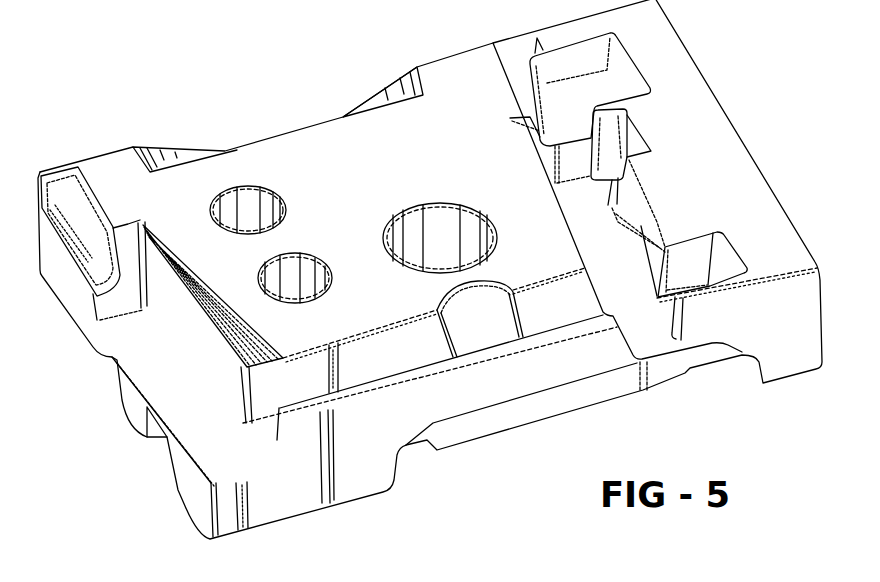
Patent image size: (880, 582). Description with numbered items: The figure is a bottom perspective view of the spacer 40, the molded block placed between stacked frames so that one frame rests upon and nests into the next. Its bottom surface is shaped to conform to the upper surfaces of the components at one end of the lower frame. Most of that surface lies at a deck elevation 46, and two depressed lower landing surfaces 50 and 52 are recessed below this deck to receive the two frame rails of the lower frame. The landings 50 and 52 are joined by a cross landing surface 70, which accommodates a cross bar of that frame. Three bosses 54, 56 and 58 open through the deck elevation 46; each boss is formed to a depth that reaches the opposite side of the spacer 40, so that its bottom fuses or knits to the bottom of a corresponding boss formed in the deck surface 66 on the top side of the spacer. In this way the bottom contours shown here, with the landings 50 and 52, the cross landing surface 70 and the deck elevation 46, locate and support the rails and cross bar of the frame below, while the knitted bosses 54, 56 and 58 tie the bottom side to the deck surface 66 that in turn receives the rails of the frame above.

The spacer 40 is at (716, 98).
The deck elevation 46 is at (307, 150).
The landing surface 50 is at (613, 259).
The landing surface 52 is at (150, 362).
The boss 54 is at (437, 228).
The boss 56 is at (247, 203).
The boss 58 is at (298, 278).
The deck surface 66 is at (560, 581).
The cross landing surface 70 is at (253, 440).